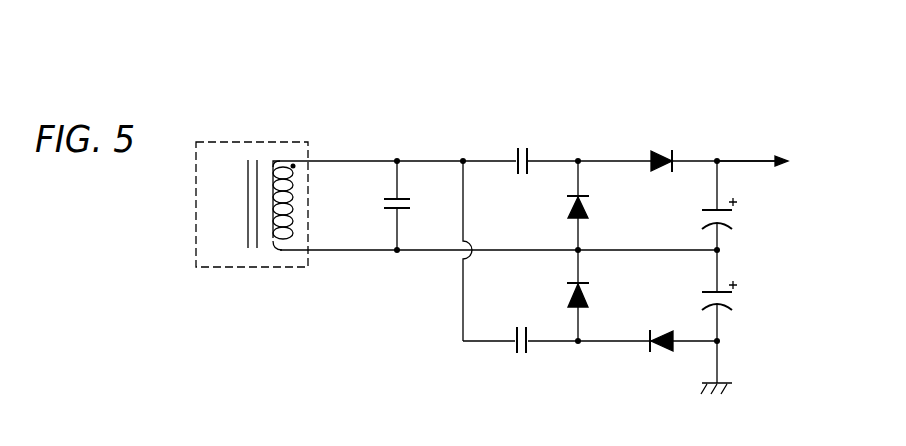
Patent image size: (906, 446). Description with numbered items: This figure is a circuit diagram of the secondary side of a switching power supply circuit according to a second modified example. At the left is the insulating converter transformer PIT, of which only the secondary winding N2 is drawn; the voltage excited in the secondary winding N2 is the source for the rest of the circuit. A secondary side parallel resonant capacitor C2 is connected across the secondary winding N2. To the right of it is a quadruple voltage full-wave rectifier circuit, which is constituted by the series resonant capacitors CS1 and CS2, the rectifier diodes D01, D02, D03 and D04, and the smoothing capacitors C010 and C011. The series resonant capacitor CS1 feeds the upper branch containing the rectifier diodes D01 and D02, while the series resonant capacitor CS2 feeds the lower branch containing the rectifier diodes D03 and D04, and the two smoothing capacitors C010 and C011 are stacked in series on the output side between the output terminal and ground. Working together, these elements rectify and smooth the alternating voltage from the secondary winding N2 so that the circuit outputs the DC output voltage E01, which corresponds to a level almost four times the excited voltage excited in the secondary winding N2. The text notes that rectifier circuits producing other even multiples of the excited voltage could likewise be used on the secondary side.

The insulating converter transformer PIT is at (252, 191).
The secondary winding N2 is at (296, 197).
The secondary side parallel resonant capacitor C2 is at (406, 205).
The series resonant capacitor CS1 is at (521, 148).
The series resonant capacitor CS2 is at (520, 355).
The rectifier diode D01 is at (662, 147).
The rectifier diode D02 is at (602, 209).
The rectifier diode D03 is at (602, 296).
The rectifier diode D04 is at (662, 358).
The smoothing capacitor C010 is at (749, 214).
The smoothing capacitor C011 is at (749, 297).
The DC output voltage E01 is at (775, 162).